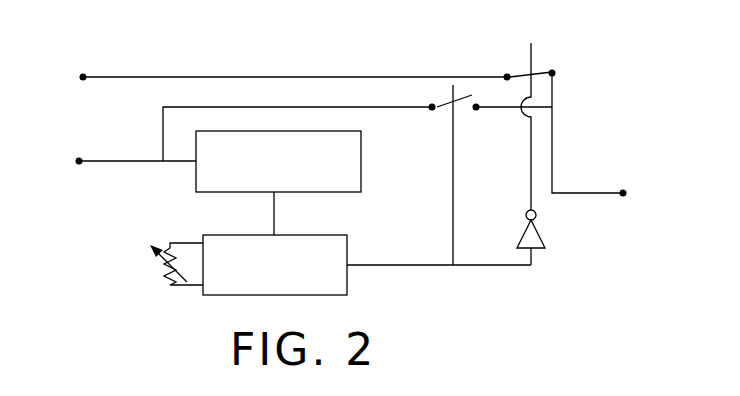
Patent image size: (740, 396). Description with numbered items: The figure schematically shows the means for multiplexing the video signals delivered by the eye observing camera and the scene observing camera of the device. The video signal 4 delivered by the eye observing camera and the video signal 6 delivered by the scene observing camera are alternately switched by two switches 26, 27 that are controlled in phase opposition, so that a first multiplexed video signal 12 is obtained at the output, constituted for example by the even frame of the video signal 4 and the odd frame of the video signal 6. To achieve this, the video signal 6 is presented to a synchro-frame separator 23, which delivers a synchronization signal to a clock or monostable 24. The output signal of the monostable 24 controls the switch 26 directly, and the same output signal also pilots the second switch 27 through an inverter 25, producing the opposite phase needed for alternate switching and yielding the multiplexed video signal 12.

The video signal 4 is at (130, 61).
The video signal 6 is at (125, 145).
The first multiplexed video signal 12 is at (572, 170).
The synchro-frame separator 23 is at (292, 174).
The clock or monostable 24 is at (289, 270).
The inverter 25 is at (532, 237).
The switch 26 is at (432, 90).
The second switch 27 is at (512, 60).